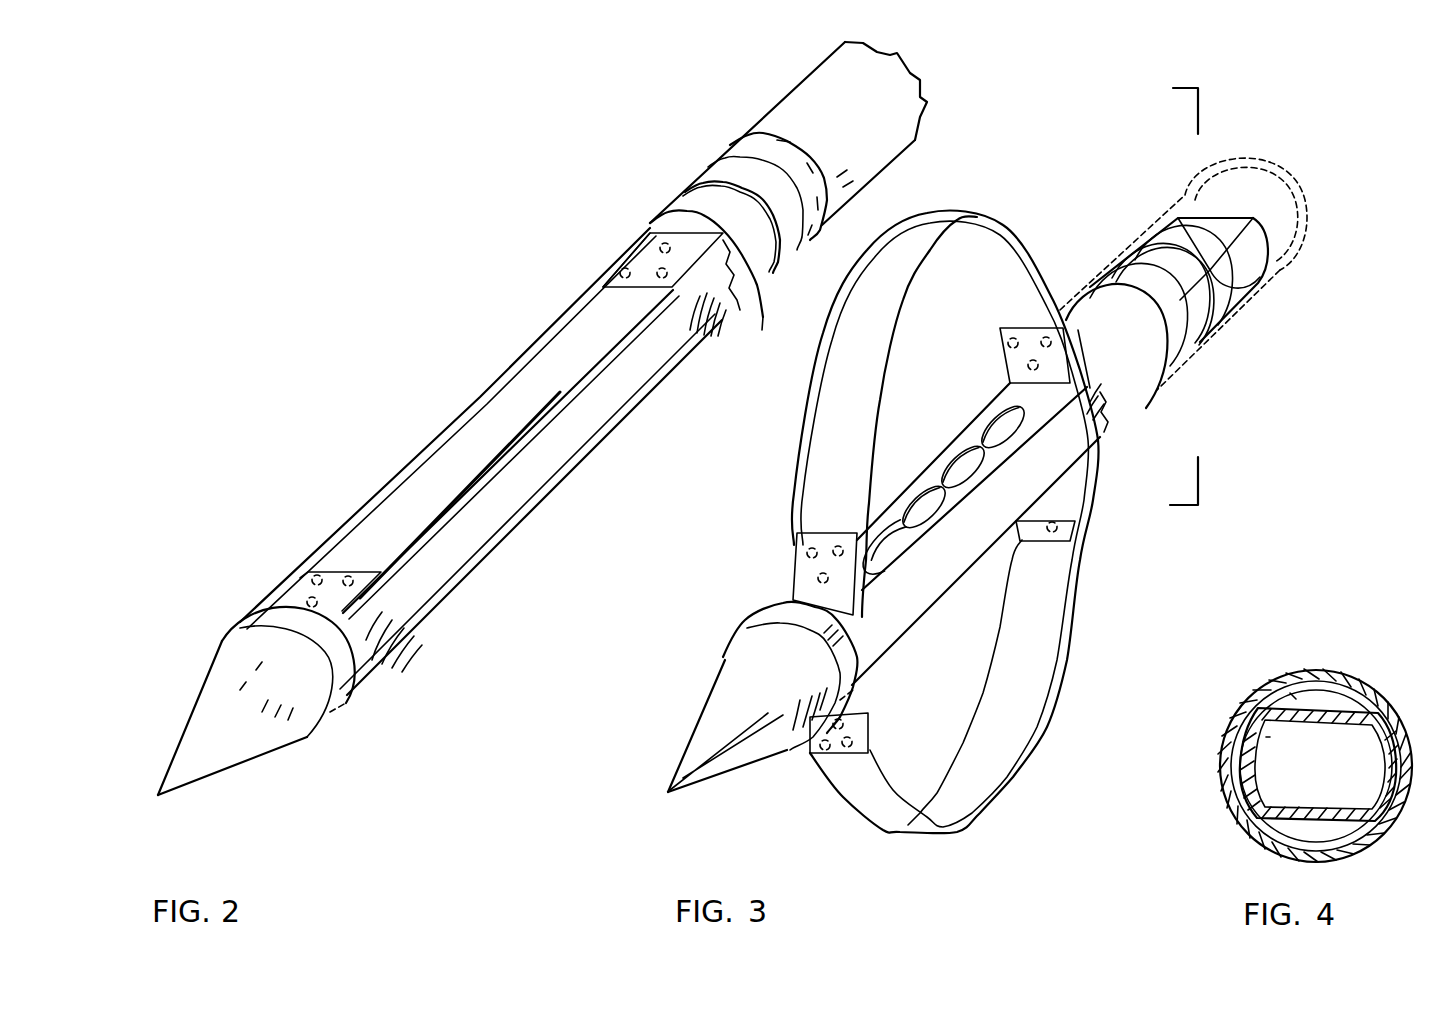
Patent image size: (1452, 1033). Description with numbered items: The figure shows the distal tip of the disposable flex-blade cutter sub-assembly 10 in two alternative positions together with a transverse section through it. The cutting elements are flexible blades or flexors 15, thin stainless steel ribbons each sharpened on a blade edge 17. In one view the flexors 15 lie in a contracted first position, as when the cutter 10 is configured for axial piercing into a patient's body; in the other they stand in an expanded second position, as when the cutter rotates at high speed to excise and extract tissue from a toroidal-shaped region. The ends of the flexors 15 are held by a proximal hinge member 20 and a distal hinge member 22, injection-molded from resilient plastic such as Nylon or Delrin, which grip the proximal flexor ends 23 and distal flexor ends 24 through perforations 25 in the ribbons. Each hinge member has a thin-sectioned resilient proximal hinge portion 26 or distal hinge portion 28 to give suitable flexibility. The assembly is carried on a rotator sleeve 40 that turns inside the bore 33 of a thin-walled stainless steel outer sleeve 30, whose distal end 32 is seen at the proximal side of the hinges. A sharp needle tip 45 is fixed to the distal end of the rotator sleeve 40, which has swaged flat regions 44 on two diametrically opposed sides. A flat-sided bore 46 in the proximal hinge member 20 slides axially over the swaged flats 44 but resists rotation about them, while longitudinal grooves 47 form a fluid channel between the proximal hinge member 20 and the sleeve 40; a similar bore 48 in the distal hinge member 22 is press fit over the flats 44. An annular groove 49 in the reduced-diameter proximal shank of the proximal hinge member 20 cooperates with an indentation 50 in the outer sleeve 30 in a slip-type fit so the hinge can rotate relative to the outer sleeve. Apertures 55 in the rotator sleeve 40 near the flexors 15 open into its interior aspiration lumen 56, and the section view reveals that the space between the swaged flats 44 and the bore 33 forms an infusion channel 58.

In FIG. 2, the flex-blade cutter sub-assembly 10 is at (425, 203).
In FIG. 3, the flex-blade cutter sub-assembly 10 is at (662, 588).
In FIG. 2, the flexors 15 is at (493, 410).
In FIG. 3, the flexors 15 is at (813, 472).
In FIG. 2, the blade edge 17 is at (443, 428).
In FIG. 3, the blade edge 17 is at (792, 510).
In FIG. 2, the proximal hinge member 20 is at (652, 222).
In FIG. 3, the proximal hinge member 20 is at (1130, 373).
In FIG. 2, the distal hinge member 22 is at (255, 615).
In FIG. 3, the distal hinge member 22 is at (753, 617).
In FIG. 2, the proximal flexor ends 23 is at (605, 297).
In FIG. 2, the distal flexor ends 24 is at (373, 538).
In FIG. 3, the distal flexor ends 24 is at (899, 534).
In FIG. 2, the perforations 25 is at (660, 250).
In FIG. 3, the perforations 25 is at (773, 597).
In FIG. 2, the proximal hinge portion 26 is at (763, 317).
In FIG. 3, the proximal hinge portion 26 is at (1140, 387).
In FIG. 2, the distal hinge portion 28 is at (347, 622).
In FIG. 3, the distal hinge portion 28 is at (837, 633).
In FIG. 2, the outer sleeve 30 is at (800, 80).
In FIG. 3, the outer sleeve 30 is at (1175, 204).
In FIG. 4, the outer sleeve 30 is at (1227, 748).
In FIG. 2, the distal end of outer sleeve 32 is at (750, 118).
In FIG. 3, the bore 33 is at (1305, 207).
In FIG. 4, the bore 33 is at (1308, 692).
In FIG. 3, the rotator sleeve 40 is at (1223, 303).
In FIG. 4, the rotator sleeve 40 is at (1238, 770).
In FIG. 2, the swaged flat regions 44 is at (648, 330).
In FIG. 3, the swaged flat regions 44 is at (1258, 288).
In FIG. 4, the swaged flat regions 44 is at (1277, 708).
In FIG. 2, the sharp needle tip 45 is at (177, 787).
In FIG. 3, the sharp needle tip 45 is at (670, 773).
In FIG. 2, the flat-sided bore 46 is at (704, 336).
In FIG. 3, the flat-sided bore 46 is at (1108, 432).
In FIG. 2, the longitudinal grooves 47 is at (731, 300).
In FIG. 3, the longitudinal grooves 47 is at (1120, 407).
In FIG. 2, the bore 48 is at (345, 697).
In FIG. 3, the bore 48 is at (853, 690).
In FIG. 3, the annular groove 49 is at (1173, 353).
In FIG. 2, the indentation 50 is at (727, 157).
In FIG. 3, the apertures 55 is at (920, 507).
In FIG. 4, the aspiration lumen 56 is at (1268, 737).
In FIG. 4, the infusion channel 58 is at (1297, 700).